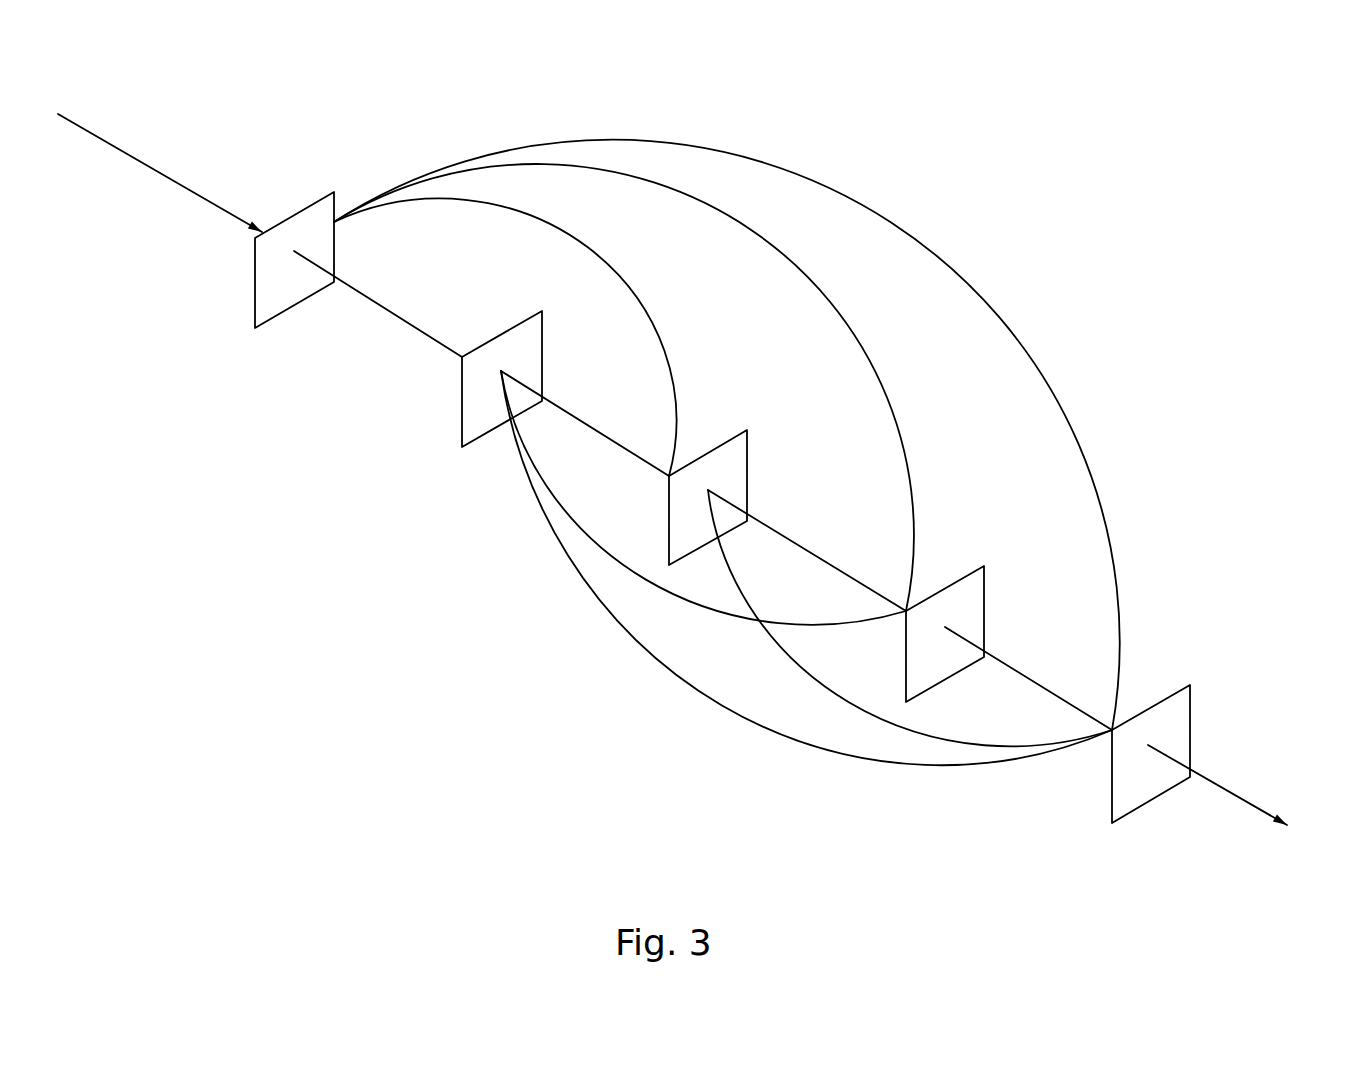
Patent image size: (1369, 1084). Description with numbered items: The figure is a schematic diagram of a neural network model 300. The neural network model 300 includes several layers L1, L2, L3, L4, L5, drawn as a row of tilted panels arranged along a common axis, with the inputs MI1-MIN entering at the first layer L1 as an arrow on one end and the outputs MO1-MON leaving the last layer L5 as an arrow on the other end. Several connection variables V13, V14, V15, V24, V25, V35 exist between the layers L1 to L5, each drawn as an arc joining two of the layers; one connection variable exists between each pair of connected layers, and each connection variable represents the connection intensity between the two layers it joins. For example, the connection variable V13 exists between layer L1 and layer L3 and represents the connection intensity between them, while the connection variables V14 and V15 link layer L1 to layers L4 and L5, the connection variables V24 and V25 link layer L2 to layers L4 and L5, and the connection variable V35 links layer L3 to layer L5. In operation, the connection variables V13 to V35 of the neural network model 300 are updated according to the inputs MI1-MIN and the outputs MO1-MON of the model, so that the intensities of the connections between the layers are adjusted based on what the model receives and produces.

The neural network model 300 is at (1010, 150).
The inputs MI1-MIN is at (88, 132).
The outputs MO1-MON is at (1288, 760).
The layer L1 is at (336, 251).
The layer L2 is at (542, 368).
The layer L3 is at (748, 488).
The layer L4 is at (984, 625).
The layer L5 is at (1190, 743).
The connection variable V13 is at (638, 297).
The connection variable V14 is at (867, 353).
The connection variable V15 is at (1093, 430).
The connection variable V24 is at (710, 612).
The connection variable V25 is at (748, 722).
The connection variable V35 is at (787, 658).